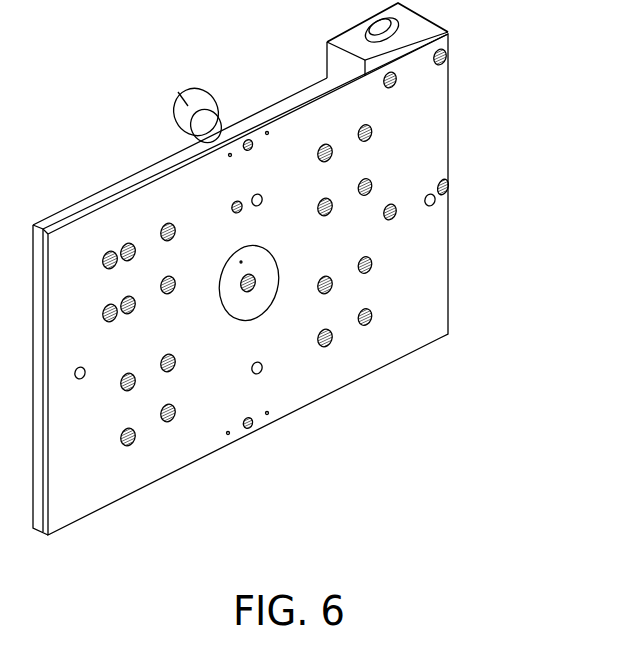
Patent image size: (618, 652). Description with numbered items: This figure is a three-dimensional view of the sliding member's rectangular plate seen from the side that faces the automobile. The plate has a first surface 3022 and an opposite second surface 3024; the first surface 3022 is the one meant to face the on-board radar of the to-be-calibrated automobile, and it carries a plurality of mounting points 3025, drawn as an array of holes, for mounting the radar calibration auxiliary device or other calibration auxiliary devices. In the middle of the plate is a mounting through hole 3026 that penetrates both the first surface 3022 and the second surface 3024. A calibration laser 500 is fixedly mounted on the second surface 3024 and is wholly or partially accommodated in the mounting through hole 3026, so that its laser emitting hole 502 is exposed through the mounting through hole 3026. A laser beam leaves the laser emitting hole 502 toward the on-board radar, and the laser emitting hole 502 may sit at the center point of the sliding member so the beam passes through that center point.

The first surface 3022 is at (435, 123).
The second surface 3024 is at (152, 168).
The mounting points 3025 is at (110, 257).
The mounting through hole 3026 is at (359, 223).
The calibration laser 500 is at (359, 316).
The laser emitting hole 502 is at (250, 280).